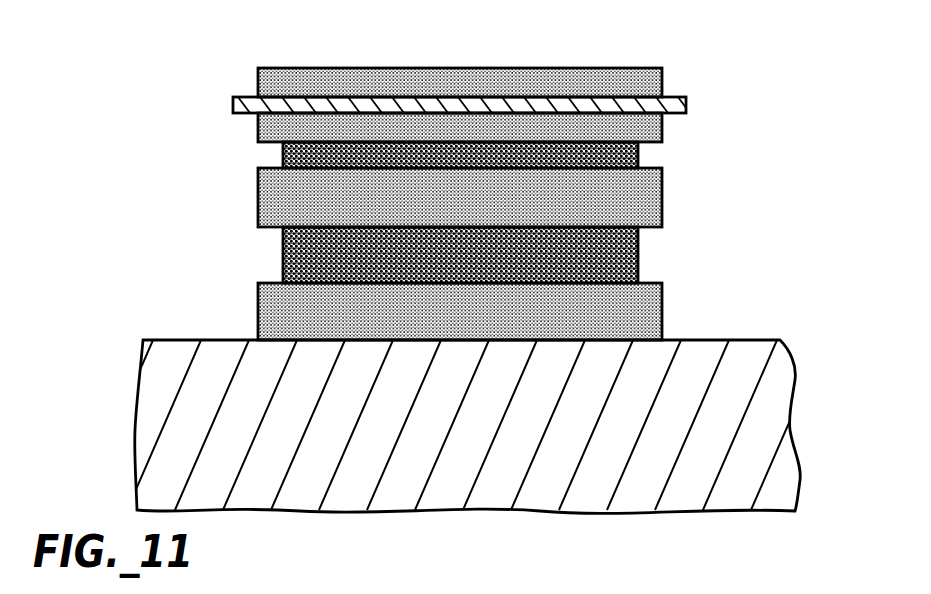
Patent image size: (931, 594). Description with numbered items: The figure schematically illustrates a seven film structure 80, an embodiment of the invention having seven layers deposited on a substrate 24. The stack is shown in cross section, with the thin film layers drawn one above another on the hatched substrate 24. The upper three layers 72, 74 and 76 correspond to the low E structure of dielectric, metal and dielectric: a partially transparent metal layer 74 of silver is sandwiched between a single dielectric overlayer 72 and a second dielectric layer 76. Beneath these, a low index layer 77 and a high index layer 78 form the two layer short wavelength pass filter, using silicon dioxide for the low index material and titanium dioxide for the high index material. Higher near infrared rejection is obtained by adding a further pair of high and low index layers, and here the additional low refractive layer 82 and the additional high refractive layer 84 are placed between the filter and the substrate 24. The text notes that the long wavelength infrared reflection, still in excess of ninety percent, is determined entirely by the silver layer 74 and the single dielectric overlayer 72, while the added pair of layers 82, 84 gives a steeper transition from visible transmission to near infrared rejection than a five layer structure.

The substrate 24 is at (782, 436).
The dielectric overlayer 72 is at (653, 83).
The partially transparent metal layer 74 is at (685, 108).
The dielectric layer 76 is at (660, 124).
The low index dielectric layer 77 is at (637, 155).
The high index dielectric layer 78 is at (650, 217).
The seven film structure 80 is at (606, 46).
The additional low refractive layer 82 is at (640, 253).
The additional high refractive layer 84 is at (650, 318).